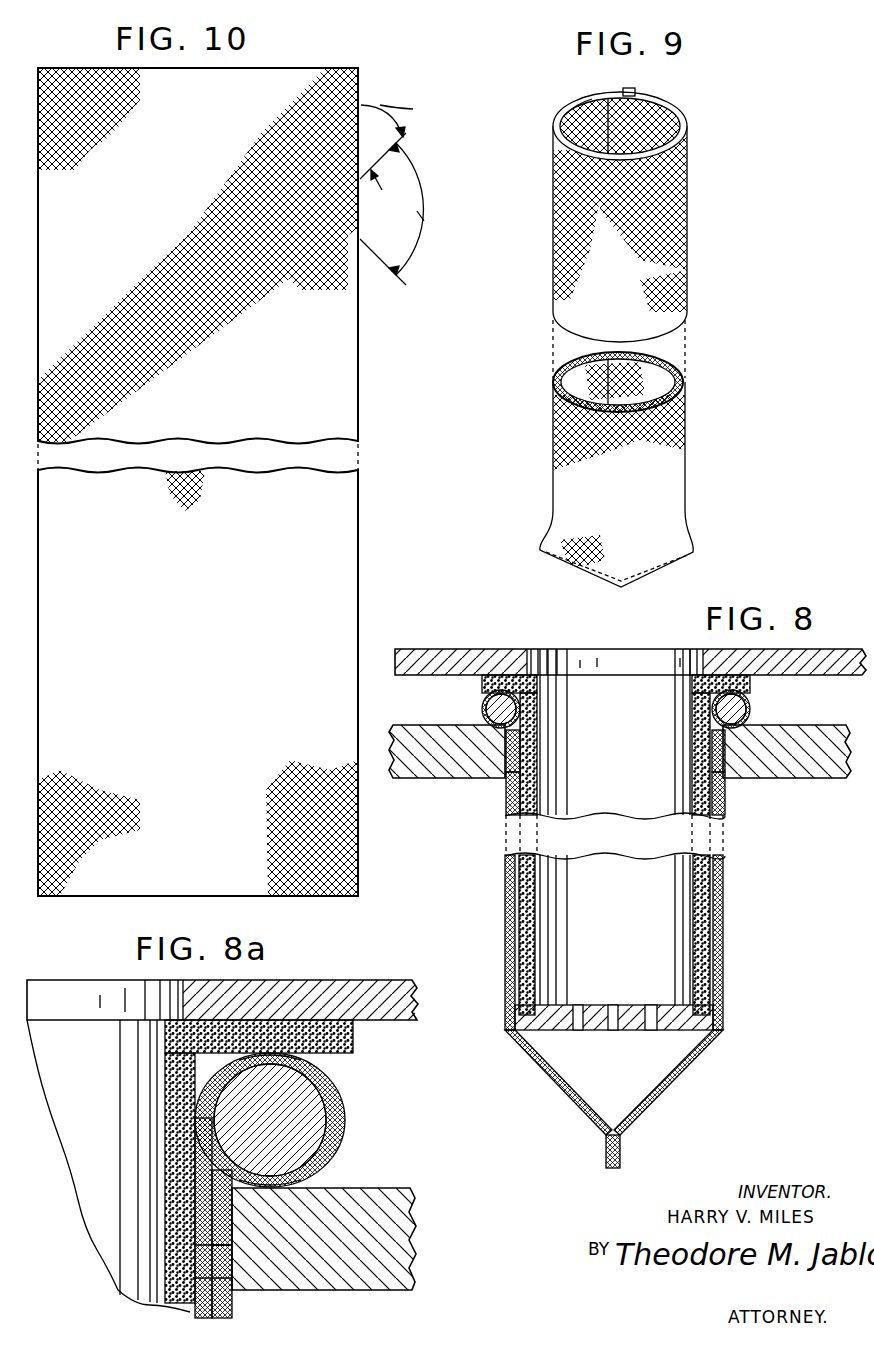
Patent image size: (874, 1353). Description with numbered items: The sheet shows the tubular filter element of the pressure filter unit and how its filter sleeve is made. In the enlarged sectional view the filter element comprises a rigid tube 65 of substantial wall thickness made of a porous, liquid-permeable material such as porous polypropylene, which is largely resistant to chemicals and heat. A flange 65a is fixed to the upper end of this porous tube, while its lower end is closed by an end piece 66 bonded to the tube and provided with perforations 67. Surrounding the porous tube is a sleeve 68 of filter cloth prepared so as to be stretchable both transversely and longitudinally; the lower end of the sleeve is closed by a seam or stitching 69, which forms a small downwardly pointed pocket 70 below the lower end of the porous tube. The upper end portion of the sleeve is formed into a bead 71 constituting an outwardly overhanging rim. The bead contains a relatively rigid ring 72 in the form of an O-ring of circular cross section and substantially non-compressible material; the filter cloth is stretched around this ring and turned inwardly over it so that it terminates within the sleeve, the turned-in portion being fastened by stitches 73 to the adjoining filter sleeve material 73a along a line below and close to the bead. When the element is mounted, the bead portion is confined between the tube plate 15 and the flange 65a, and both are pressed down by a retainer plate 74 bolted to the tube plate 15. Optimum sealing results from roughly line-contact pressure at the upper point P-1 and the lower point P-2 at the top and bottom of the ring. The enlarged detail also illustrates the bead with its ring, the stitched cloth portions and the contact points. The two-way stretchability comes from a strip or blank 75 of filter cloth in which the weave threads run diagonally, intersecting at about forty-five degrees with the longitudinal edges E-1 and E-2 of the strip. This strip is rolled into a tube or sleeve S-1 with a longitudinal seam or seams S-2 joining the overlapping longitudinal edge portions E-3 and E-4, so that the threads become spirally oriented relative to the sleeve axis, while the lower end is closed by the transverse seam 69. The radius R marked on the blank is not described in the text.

In FIG. 10, the strip or blank 75 is at (346, 558).
In FIG. 10, the longitudinal edge E-1 is at (38, 240).
In FIG. 10, the longitudinal edge E-2 is at (360, 322).
In FIG. 10, the bend radius R is at (404, 192).
In FIG. 9, the tube or sleeve S-1 is at (685, 283).
In FIG. 9, the longitudinal seam S-2 is at (620, 95).
In FIG. 9, the overlapping longitudinal edge portion E-3 is at (590, 100).
In FIG. 9, the overlapping longitudinal edge portion E-4 is at (640, 92).
In FIG. 9, the seam or stitching 69 is at (650, 553).
In FIG. 8, the seam or stitching 69 is at (620, 1150).
In FIG. 8, the retainer plate 74 is at (715, 655).
In FIG. 8a, the retainer plate 74 is at (315, 985).
In FIG. 8, the flange 65a is at (480, 686).
In FIG. 8a, the flange 65a is at (348, 1040).
In FIG. 8, the rigid tube 65 is at (530, 782).
In FIG. 8a, the rigid tube 65 is at (176, 1126).
In FIG. 8, the bead 71 is at (752, 704).
In FIG. 8a, the bead 71 is at (350, 1103).
In FIG. 8, the rigid ring 72 is at (746, 721).
In FIG. 8a, the rigid ring 72 is at (296, 1127).
In FIG. 8, the stitches 73 is at (722, 735).
In FIG. 8a, the stitches 73 is at (200, 1242).
In FIG. 8, the filter sleeve material 73a is at (727, 772).
In FIG. 8a, the filter sleeve material 73a is at (222, 1265).
In FIG. 8, the tube plate 15 is at (470, 779).
In FIG. 8a, the tube plate 15 is at (324, 1239).
In FIG. 8, the sleeve 68 is at (722, 938).
In FIG. 8, the end piece 66 is at (550, 1028).
In FIG. 8, the perforations 67 is at (651, 1028).
In FIG. 8, the pocket 70 is at (662, 1063).
In FIG. 8a, the upper point P-1 is at (276, 1062).
In FIG. 8a, the lower point P-2 is at (300, 1164).